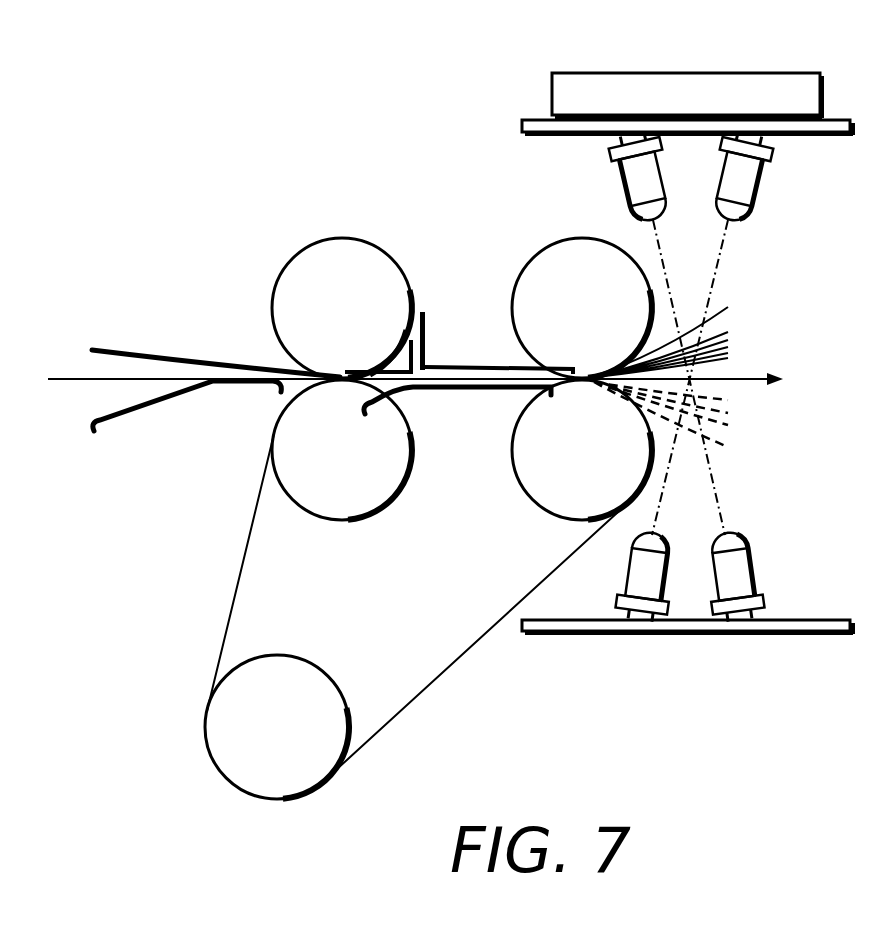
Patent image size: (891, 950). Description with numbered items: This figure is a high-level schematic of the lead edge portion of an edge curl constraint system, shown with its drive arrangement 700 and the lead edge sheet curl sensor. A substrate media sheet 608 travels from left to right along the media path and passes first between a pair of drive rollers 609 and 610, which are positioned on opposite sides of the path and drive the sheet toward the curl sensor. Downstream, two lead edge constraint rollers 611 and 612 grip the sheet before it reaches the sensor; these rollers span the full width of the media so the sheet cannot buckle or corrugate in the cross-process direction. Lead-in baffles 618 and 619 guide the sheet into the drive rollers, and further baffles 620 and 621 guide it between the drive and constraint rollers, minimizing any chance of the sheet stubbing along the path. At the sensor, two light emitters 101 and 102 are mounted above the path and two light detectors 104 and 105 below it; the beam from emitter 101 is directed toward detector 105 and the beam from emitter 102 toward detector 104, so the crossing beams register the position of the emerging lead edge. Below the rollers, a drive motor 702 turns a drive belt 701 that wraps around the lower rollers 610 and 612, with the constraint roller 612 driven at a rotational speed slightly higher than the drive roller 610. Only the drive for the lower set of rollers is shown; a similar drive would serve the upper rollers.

The printing system 700 is at (493, 52).
The light emitter 101 is at (623, 182).
The light emitter 102 is at (760, 182).
The light detector 104 is at (623, 575).
The light detector 105 is at (753, 575).
The substrate media sheet 608 is at (720, 310).
The drive roller 609 is at (363, 236).
The drive roller 610 is at (390, 512).
The constraint roller 611 is at (580, 238).
The constraint roller 612 is at (540, 512).
The lead-in baffle 618 is at (140, 352).
The lead-in baffle 619 is at (130, 408).
The lead-in baffle 620 is at (447, 362).
The lead-in baffle 621 is at (450, 390).
The drive belt 701 is at (242, 558).
The drive motor 702 is at (312, 658).